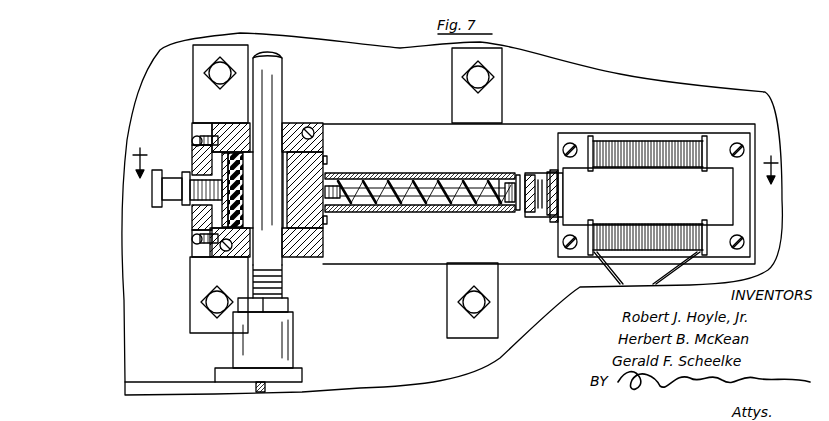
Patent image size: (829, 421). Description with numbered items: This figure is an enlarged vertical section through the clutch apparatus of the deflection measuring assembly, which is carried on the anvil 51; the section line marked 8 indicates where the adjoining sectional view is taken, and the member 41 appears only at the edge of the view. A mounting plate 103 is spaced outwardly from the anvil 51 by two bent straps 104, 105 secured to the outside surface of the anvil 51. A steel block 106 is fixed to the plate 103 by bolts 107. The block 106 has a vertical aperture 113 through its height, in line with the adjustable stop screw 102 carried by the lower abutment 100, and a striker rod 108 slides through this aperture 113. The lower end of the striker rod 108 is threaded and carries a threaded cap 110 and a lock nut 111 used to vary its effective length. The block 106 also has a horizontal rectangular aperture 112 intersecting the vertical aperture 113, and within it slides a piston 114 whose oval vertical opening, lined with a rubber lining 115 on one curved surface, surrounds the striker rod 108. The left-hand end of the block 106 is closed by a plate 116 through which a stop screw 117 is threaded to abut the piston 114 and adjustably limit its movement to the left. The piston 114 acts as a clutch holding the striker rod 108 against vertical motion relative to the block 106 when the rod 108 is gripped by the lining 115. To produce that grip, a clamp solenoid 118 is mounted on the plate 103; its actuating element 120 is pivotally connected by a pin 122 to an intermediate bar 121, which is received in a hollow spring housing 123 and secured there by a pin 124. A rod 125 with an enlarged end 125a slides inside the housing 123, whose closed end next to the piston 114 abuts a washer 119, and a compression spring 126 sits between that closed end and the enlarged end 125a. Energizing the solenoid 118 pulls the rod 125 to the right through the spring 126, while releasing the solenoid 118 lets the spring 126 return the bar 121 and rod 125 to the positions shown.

The lower abutment 100 is at (185, 381).
The adjustable vertical screw 102 is at (256, 389).
The mounting plate 103 is at (383, 266).
The bent strap 104 is at (193, 70).
The bent strap 105 is at (452, 100).
The steel block 106 is at (298, 122).
The bolts 107 is at (334, 113).
The striker rod 108 is at (284, 82).
The threaded cap 110 is at (294, 352).
The lock nut 111 is at (290, 305).
The horizontal rectangular aperture 112 is at (327, 236).
The vertical aperture 113 is at (282, 264).
The slidable piston 114 is at (337, 152).
The rubber lining 115 is at (232, 150).
The plate 116 is at (192, 225).
The stop screw 117 is at (170, 175).
The clamp solenoid 118 is at (676, 140).
The washer 119 is at (328, 216).
The actuating element 120 is at (548, 172).
The intermediate bar 121 is at (528, 217).
The pin 122 is at (551, 222).
The spring housing 123 is at (477, 180).
The pin 124 is at (518, 174).
The rod 125 is at (386, 184).
The enlarged end 125a is at (505, 210).
The compression spring 126 is at (428, 212).
The frame member 41 is at (462, 3).
The anvil 51 is at (384, 96).
The section line 8- 8 is at (455, 175).